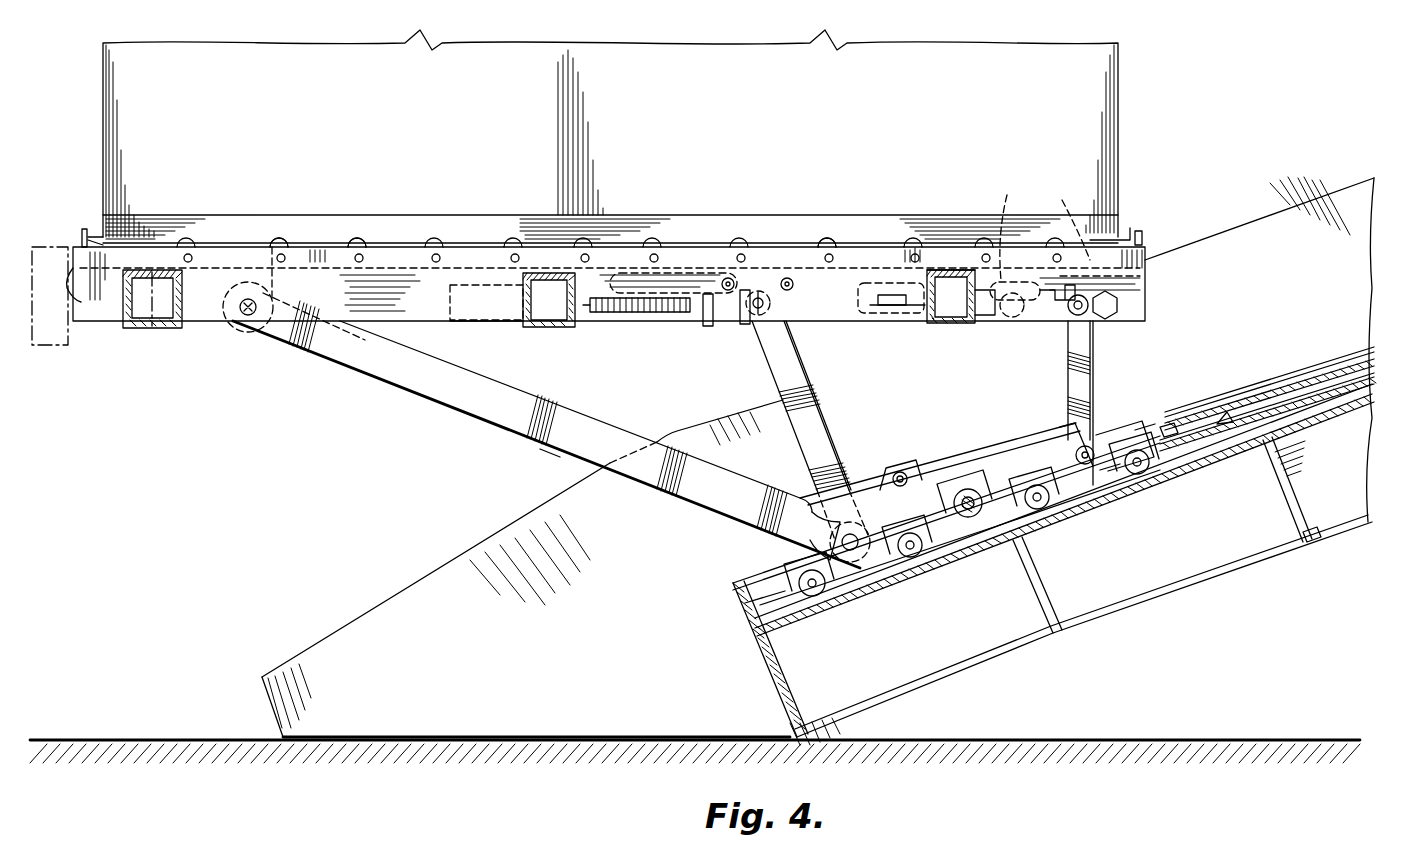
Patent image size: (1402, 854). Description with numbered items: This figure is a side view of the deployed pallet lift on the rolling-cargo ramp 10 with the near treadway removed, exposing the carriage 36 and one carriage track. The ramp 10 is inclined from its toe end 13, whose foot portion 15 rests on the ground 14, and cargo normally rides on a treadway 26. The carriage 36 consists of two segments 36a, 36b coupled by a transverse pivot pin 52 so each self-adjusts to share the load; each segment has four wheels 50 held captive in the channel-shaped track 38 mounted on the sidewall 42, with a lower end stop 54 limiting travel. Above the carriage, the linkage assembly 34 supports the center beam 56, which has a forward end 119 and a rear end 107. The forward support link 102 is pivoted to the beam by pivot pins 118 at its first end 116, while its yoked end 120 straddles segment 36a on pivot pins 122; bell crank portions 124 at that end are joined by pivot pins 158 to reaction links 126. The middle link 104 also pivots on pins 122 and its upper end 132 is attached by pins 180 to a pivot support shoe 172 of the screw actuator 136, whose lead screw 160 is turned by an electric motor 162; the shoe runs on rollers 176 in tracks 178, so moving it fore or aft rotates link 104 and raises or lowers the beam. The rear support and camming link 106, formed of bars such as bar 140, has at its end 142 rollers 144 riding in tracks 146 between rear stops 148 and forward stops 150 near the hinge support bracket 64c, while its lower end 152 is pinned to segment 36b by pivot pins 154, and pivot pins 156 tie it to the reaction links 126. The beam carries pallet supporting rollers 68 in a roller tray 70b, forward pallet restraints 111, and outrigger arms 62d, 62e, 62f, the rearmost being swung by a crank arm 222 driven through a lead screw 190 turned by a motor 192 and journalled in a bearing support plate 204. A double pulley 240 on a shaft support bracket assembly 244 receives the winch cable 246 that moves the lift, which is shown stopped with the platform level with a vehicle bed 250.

The rolling-cargo ramp 10 is at (1255, 215).
The toe end 13 is at (259, 678).
The ground 14 is at (194, 734).
The foot portion 15 is at (430, 736).
The treadway 26 is at (698, 421).
The beam retract/deploy and support linkage assembly 34 is at (568, 455).
The carriage 36 is at (1140, 410).
The carriage segment 36a is at (874, 582).
The carriage segment 36b is at (1086, 524).
The track 38 is at (734, 584).
The sidewall 42 is at (1304, 294).
The wheels 50 is at (813, 598).
The pivot pin 52 is at (976, 522).
The lower end stop 54 is at (743, 606).
The center beam 56 is at (206, 323).
The outrigger arm 62d is at (125, 300).
The outrigger arm 62e is at (516, 302).
The outrigger arm 62f is at (920, 262).
The hinge support bracket 64c is at (934, 268).
The pallet supporting rollers 68 is at (354, 240).
The roller tray 70b is at (473, 255).
The forward support link 102 is at (519, 388).
The middle support and actuator link 104 is at (824, 406).
The rear support and camming link 106 is at (1094, 357).
The rear end 107 is at (1148, 248).
The forward pallet restraints 111 is at (86, 228).
The first end 116 is at (240, 322).
The pivot pins 118 is at (273, 327).
The forward end 119 is at (74, 272).
The yoked end 120 is at (856, 596).
The pivot pins 122 is at (807, 544).
The bell crank portion 124 is at (862, 480).
The reaction links 126 is at (989, 450).
The upper end 132 is at (748, 318).
The screw actuator 136 is at (653, 323).
The structural bar 140 is at (1060, 330).
The end 142 is at (1108, 318).
The rollers 144 is at (1146, 276).
The tracks 146 is at (1011, 332).
The rear stops 148 is at (1146, 300).
The forward stops 150 is at (990, 340).
The lower end 152 is at (1104, 486).
The pivot pins 154 is at (1100, 444).
The pivot pins 156 is at (1074, 418).
The pivot pins 158 is at (901, 472).
The lead screw 160 is at (608, 324).
The electric motor 162 is at (488, 324).
The pivot support shoe 172 is at (704, 326).
The rollers 176 is at (760, 268).
The tracks 178 is at (674, 273).
The pins 180 is at (754, 326).
The lead screw 190 is at (1019, 228).
The motor 192 is at (1070, 219).
The bearing support plate 204 is at (852, 313).
The crank arm 222 is at (913, 315).
The double pulley 240 is at (1218, 410).
The pulley shaft and shaft support bracket assembly 244 is at (1164, 424).
The cable 246 is at (1296, 398).
The bed 250 is at (66, 248).